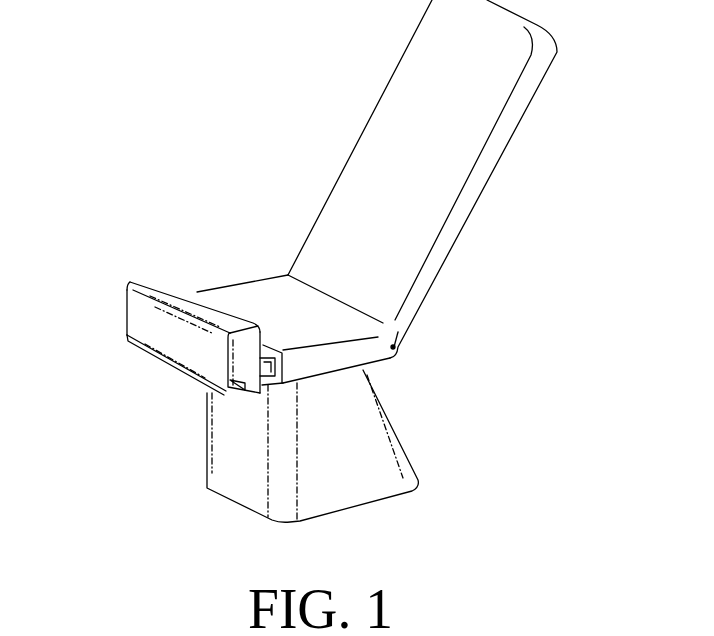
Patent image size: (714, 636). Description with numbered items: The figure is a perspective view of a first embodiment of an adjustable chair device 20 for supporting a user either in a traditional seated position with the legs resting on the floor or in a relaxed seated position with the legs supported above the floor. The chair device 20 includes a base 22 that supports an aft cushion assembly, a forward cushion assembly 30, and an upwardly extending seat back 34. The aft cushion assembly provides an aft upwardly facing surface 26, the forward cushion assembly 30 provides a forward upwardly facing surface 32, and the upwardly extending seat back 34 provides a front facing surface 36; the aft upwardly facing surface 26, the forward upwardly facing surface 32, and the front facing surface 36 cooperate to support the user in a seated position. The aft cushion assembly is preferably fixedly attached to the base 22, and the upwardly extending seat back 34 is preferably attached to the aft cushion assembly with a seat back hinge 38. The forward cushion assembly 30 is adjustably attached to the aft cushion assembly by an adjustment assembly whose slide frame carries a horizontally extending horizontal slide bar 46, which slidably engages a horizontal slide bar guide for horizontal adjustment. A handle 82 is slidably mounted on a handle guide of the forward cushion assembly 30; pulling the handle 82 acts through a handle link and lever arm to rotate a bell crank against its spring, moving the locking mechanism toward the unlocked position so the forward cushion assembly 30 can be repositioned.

The chair device 20 is at (262, 66).
The base 22 is at (377, 472).
The aft upwardly facing surface 26 is at (308, 317).
The forward cushion assembly 30 is at (240, 355).
The forward upwardly facing surface 32 is at (157, 283).
The upwardly extending seat back 34 is at (465, 203).
The front facing surface 36 is at (437, 159).
The seat back hinge 38 is at (393, 347).
The horizontal slide bar 46 is at (257, 385).
The handle 82 is at (143, 350).